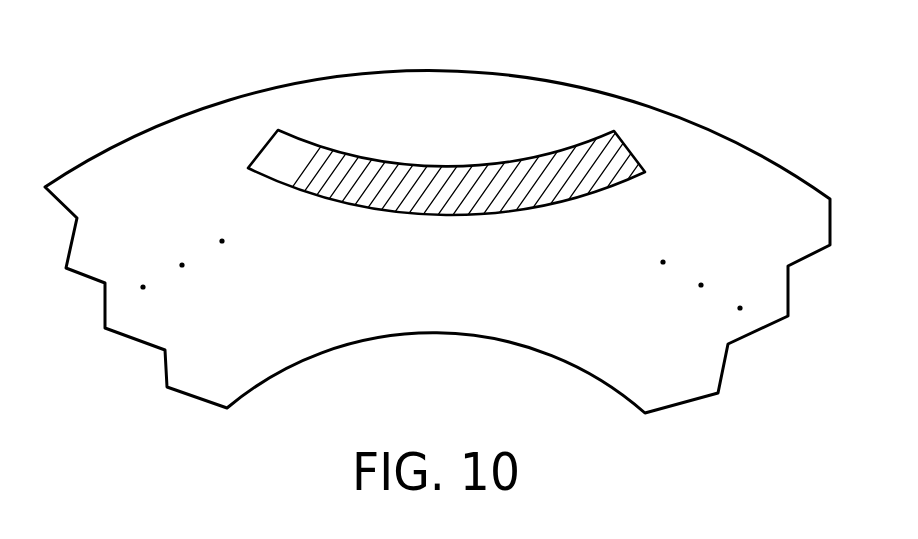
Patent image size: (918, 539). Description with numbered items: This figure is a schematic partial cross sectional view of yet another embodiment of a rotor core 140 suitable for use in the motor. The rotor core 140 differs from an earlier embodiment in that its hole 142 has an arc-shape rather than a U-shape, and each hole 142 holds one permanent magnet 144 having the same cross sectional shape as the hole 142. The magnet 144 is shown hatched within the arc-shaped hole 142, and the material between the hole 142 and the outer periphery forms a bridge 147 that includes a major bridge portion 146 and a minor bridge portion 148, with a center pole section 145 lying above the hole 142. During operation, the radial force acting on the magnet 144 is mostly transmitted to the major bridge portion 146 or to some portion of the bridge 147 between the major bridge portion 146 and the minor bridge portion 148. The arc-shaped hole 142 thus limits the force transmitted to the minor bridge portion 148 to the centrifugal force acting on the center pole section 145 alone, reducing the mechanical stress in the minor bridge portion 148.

The rotor core 140 is at (117, 122).
The hole 142 is at (358, 233).
The magnet 144 is at (523, 193).
The center pole section 145 is at (455, 100).
The major bridge portion 146 is at (207, 139).
The bridge 147 is at (240, 113).
The minor bridge portion 148 is at (294, 110).